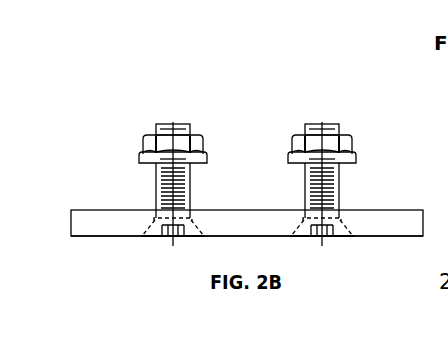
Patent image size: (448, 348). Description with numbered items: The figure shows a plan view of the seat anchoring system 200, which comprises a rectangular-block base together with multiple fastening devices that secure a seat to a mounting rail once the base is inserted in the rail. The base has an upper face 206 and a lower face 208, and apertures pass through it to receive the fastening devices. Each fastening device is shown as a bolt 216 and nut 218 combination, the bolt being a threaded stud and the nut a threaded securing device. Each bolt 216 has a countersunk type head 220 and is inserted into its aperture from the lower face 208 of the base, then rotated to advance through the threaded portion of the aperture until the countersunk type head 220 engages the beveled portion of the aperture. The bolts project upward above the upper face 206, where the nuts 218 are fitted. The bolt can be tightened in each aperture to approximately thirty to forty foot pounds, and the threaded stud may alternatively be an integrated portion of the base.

The seat anchoring system 200 is at (195, 86).
The upper face 206 is at (99, 209).
The lower face 208 is at (99, 237).
The bolt 216 is at (314, 128).
The nut 218 is at (347, 132).
The countersunk type head 220 is at (339, 227).